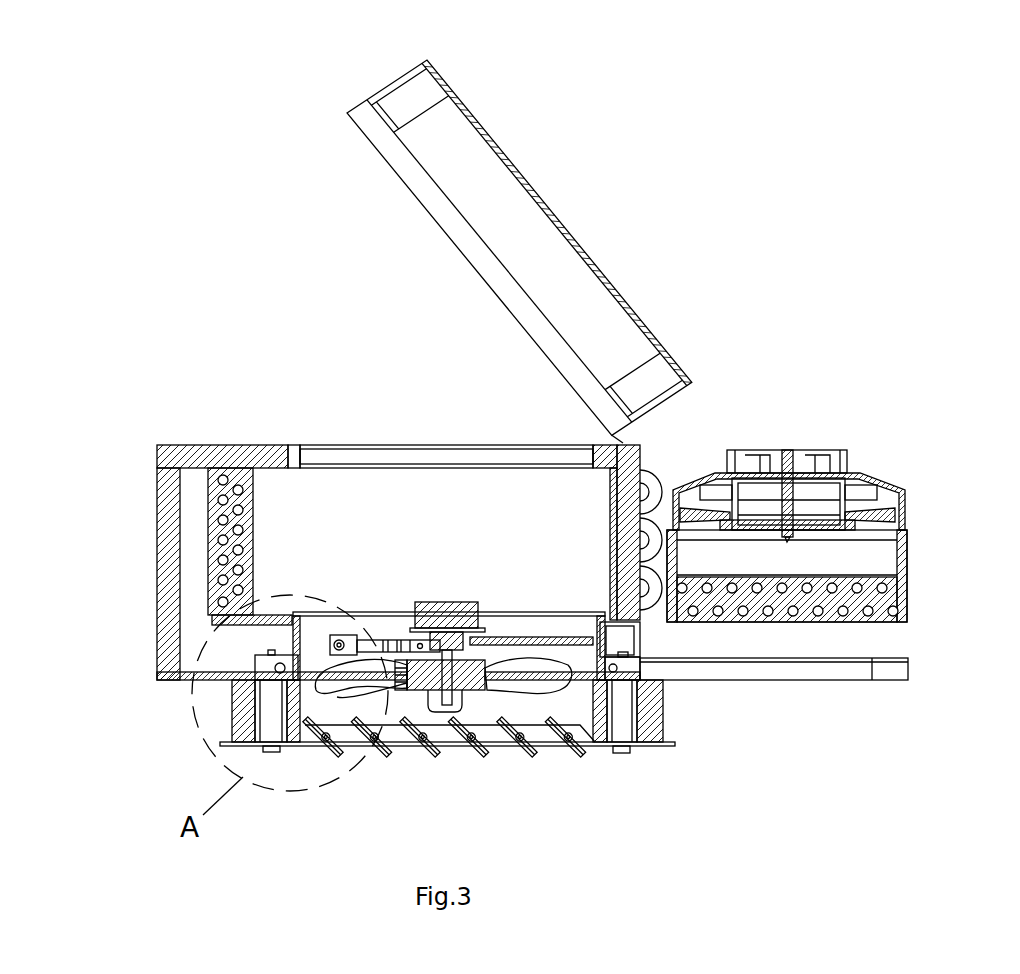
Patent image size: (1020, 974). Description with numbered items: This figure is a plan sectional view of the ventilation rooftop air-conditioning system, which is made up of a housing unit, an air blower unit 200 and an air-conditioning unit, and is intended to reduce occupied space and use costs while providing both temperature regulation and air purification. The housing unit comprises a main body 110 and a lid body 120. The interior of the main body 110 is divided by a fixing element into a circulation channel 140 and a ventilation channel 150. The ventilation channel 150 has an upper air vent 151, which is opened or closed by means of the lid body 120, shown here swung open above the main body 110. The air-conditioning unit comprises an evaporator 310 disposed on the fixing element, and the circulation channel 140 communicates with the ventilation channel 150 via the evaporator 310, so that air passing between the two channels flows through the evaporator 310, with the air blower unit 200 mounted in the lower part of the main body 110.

The main body 110 is at (239, 438).
The lid body 120 is at (564, 229).
The upper air vent 151 is at (460, 455).
The evaporator 310 is at (198, 535).
The ventilation channel 150 is at (598, 487).
The circulation channel 140 is at (181, 651).
The air blower unit 200 is at (474, 711).